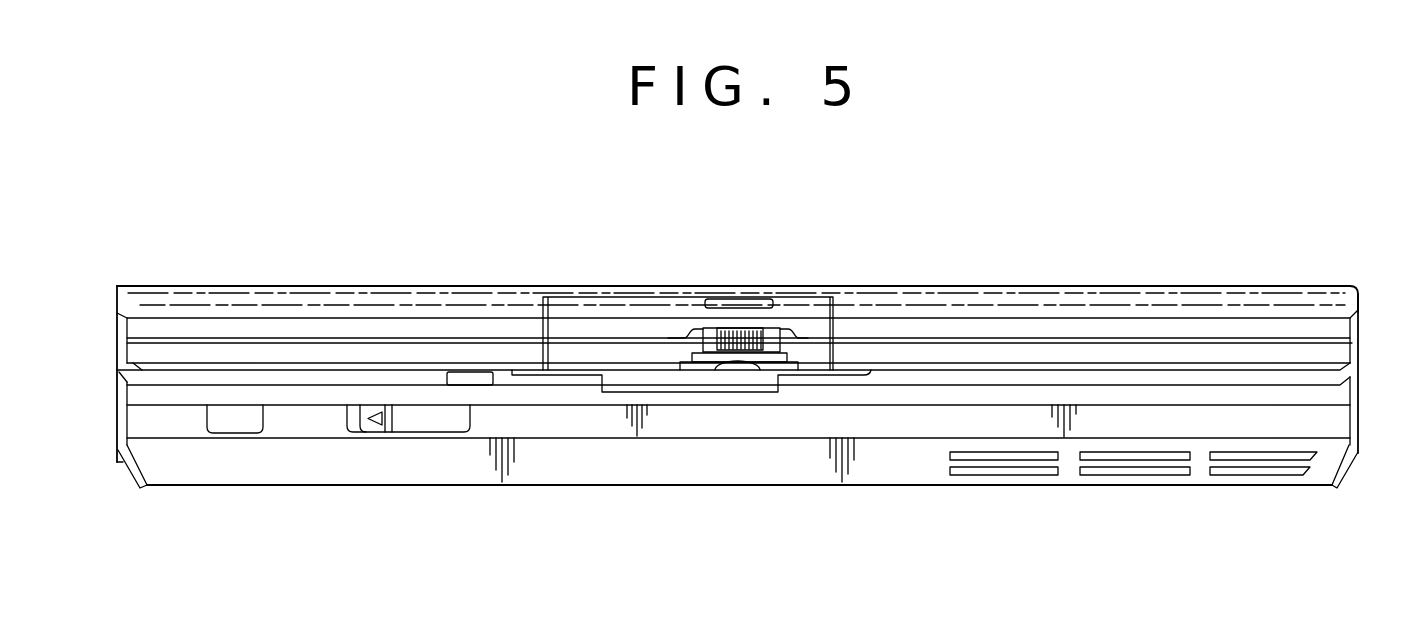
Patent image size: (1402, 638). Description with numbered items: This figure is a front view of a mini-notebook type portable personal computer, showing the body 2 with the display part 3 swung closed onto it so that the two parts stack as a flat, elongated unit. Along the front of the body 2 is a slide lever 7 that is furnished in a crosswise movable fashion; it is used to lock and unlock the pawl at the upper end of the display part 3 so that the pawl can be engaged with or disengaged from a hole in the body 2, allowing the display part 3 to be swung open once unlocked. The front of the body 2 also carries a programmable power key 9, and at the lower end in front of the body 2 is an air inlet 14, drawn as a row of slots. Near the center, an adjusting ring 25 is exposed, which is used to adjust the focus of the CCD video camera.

The body 2 is at (708, 486).
The display part 3 is at (1162, 284).
The slide lever 7 is at (418, 426).
The programmable power key 9 is at (233, 428).
The air inlet 14 is at (1133, 471).
The adjusting ring 25 is at (745, 327).